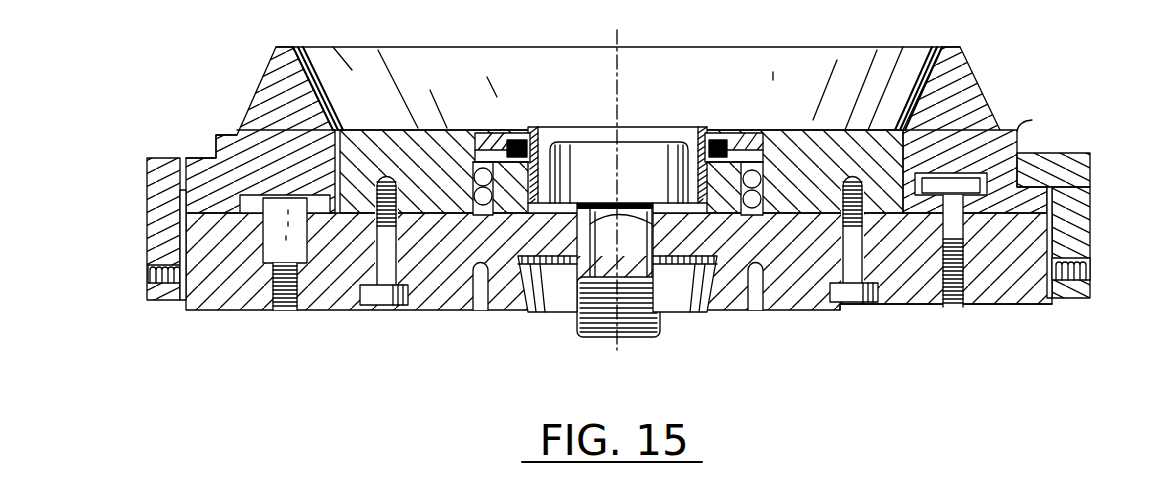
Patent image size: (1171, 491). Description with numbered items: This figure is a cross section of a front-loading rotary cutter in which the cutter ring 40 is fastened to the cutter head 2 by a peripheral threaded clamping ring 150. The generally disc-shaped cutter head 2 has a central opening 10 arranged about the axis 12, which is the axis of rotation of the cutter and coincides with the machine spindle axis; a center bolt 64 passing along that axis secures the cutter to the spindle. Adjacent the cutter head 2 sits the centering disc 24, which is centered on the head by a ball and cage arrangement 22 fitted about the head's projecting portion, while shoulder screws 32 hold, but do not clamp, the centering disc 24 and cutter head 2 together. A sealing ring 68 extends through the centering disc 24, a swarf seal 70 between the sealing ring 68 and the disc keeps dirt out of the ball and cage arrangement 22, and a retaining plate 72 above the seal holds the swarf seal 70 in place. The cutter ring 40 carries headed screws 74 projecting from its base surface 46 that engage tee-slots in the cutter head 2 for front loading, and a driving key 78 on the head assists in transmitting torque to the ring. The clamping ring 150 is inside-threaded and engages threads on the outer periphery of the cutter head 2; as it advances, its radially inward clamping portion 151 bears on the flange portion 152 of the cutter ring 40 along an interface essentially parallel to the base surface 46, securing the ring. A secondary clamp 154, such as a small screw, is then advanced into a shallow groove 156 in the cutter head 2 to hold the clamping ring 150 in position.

The cutter head 2 is at (222, 312).
The central opening 10 is at (555, 292).
The axis 12 is at (618, 95).
The ball and cage arrangement 22 is at (480, 160).
The centering disc 24 is at (375, 150).
The shoulder screws 32 is at (385, 308).
The cutter ring 40 is at (1001, 100).
The base surface 46 is at (170, 207).
The center bolt 64 is at (637, 340).
The sealing ring 68 is at (716, 140).
The swarf seal 70 is at (518, 135).
The retaining plate 72 is at (733, 110).
The headed screws 74 is at (1020, 130).
The driving key 78 is at (288, 310).
The clamping ring 150 is at (1080, 212).
The clamping portion 151 is at (200, 165).
The flange portion 152 is at (1070, 168).
The secondary clamp 154 is at (1092, 265).
The shallow groove 156 is at (1030, 305).